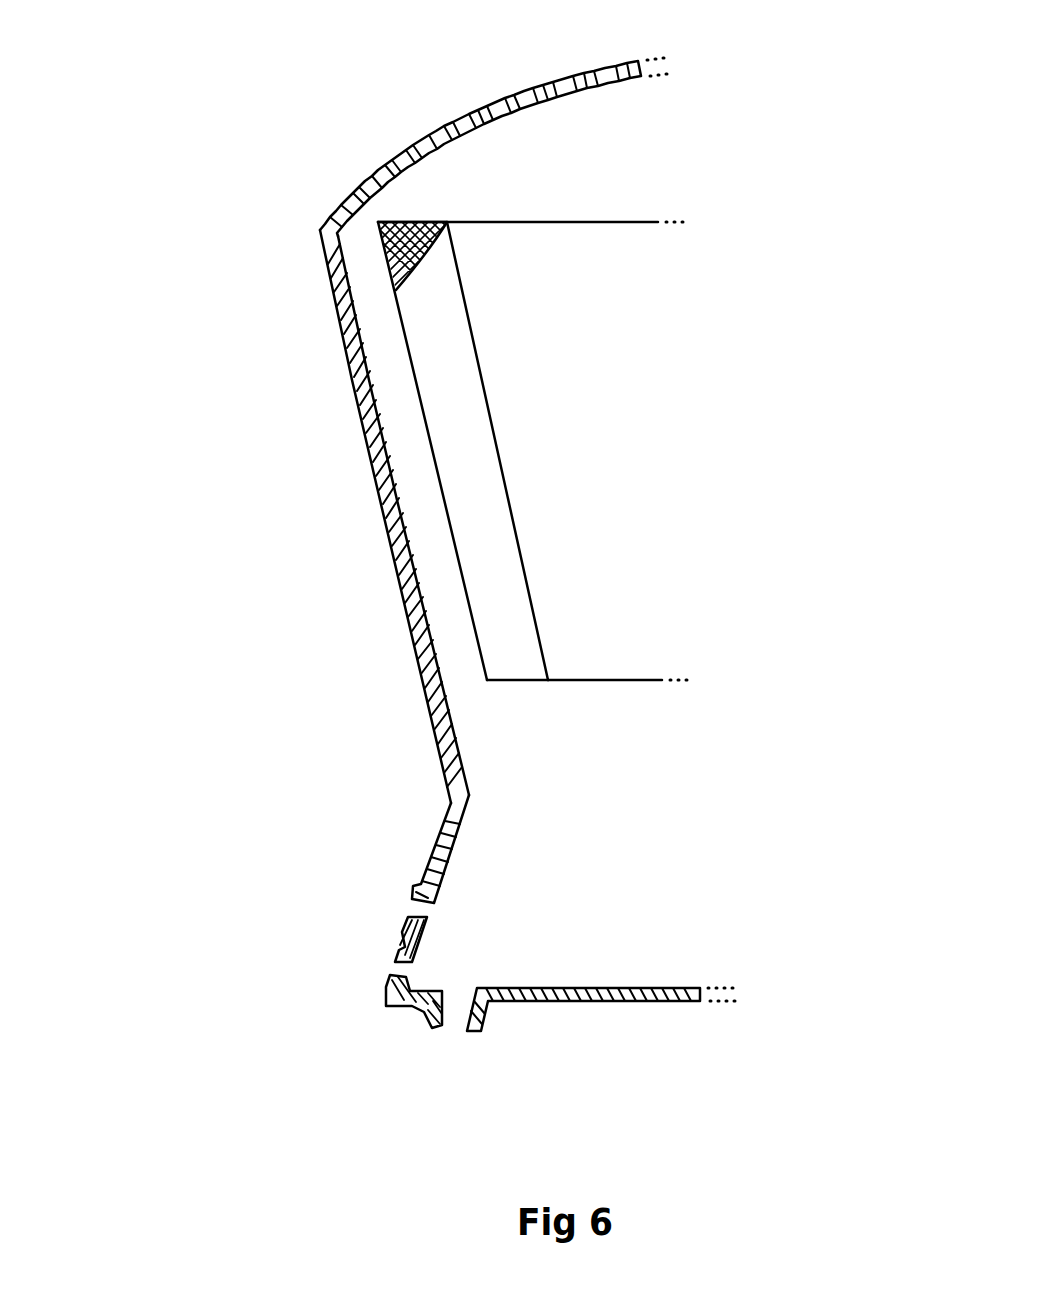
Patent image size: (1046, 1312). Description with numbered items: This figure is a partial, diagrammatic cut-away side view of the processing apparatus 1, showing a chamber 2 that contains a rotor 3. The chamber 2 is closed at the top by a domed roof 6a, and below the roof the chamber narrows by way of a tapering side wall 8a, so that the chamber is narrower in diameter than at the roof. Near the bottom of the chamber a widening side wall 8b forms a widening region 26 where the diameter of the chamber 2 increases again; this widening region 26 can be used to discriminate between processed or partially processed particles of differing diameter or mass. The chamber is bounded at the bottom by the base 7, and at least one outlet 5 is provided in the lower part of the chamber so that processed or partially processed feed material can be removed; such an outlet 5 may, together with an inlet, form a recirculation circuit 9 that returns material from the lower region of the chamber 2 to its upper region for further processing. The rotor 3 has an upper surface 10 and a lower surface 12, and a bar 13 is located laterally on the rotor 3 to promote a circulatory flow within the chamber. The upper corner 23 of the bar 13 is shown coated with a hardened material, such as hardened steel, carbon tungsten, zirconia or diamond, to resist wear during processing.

The processing apparatus 1 is at (198, 438).
The chamber 2 is at (650, 793).
The rotor 3 is at (492, 451).
The outlet 5 is at (453, 1041).
The domed roof 6a is at (417, 135).
The base 7 is at (632, 1000).
The tapering side wall 8a is at (400, 592).
The widening side wall 8b is at (438, 843).
The recirculation circuit 9 is at (398, 908).
The upper surface 10 is at (630, 222).
The lower surface 12 is at (630, 680).
The bar 13 is at (517, 667).
The upper corner 23 is at (433, 216).
The widening region 26 is at (476, 887).